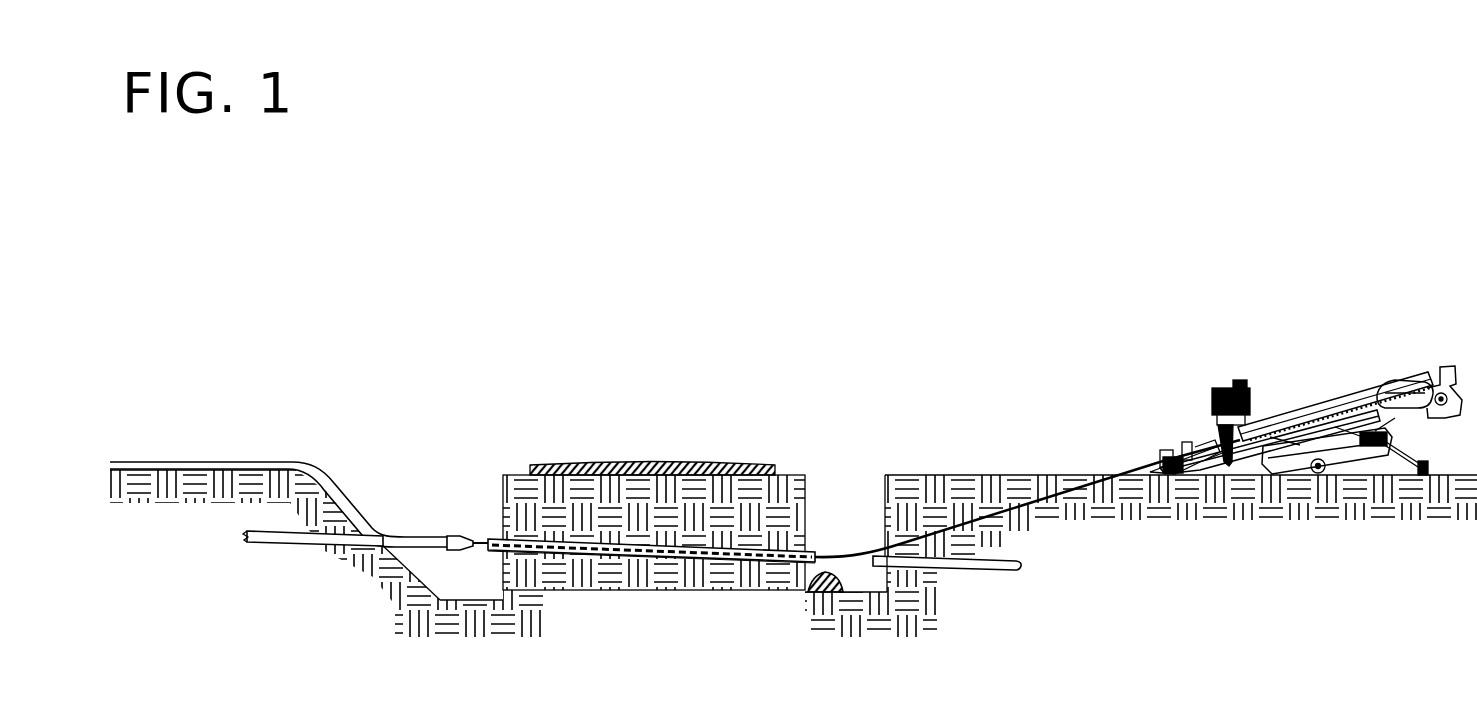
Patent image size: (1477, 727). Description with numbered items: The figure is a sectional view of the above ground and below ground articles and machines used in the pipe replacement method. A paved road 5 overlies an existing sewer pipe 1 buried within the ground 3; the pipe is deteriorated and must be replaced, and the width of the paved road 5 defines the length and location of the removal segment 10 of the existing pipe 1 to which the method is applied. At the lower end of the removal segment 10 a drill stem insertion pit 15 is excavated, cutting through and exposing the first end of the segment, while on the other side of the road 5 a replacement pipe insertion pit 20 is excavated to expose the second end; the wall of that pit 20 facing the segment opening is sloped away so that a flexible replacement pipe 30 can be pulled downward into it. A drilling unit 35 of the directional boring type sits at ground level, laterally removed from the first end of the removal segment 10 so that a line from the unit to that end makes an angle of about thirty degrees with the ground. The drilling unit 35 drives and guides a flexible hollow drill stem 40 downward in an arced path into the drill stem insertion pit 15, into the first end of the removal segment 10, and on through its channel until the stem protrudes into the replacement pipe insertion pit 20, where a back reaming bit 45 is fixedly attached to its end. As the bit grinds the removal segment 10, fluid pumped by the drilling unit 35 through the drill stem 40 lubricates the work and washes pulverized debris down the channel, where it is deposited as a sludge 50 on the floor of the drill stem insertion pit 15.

The existing sewer pipe 1 is at (262, 542).
The ground 3 is at (961, 488).
The paved road 5 is at (606, 464).
The removal segment 10 is at (688, 562).
The drill stem insertion pit 15 is at (837, 490).
The replacement pipe insertion pit 20 is at (434, 509).
The flexible replacement pipe 30 is at (189, 467).
The drilling unit 35 is at (1391, 386).
The flexible hollow drill stem 40 is at (1065, 513).
The back reaming bit 45 is at (462, 550).
The sludge 50 is at (833, 592).